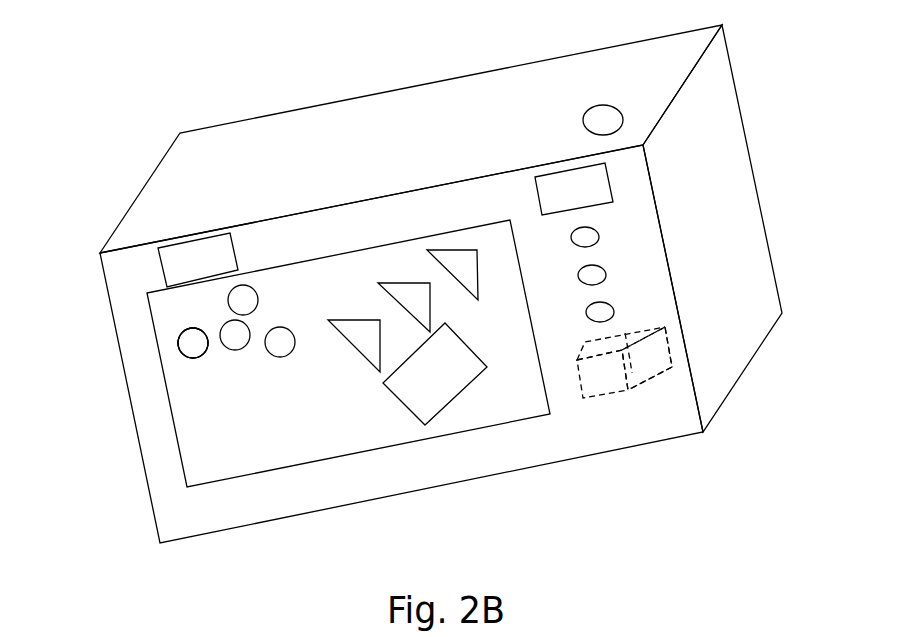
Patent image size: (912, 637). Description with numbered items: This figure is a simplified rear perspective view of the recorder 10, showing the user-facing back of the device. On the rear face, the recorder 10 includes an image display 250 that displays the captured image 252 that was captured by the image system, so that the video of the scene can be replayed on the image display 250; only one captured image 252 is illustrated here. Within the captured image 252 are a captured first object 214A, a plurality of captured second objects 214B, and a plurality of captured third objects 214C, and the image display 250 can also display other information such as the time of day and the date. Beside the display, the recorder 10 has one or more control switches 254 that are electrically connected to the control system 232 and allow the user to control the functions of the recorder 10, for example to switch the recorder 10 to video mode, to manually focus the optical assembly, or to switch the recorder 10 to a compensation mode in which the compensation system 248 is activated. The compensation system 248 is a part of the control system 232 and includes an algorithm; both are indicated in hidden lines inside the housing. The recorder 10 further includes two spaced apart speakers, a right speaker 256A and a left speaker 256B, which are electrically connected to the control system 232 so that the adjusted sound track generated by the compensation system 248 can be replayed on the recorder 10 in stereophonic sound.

The recorder 10 is at (193, 128).
The left speaker 256B is at (240, 169).
The right speaker 256A is at (549, 112).
The captured second objects 214B is at (164, 273).
The image display 250 is at (167, 343).
The captured image 252 is at (126, 403).
The captured third objects 214C is at (383, 414).
The captured first object 214A is at (442, 432).
The control switches 254 is at (618, 307).
The control system 232 is at (637, 428).
The compensation system 248 is at (690, 423).